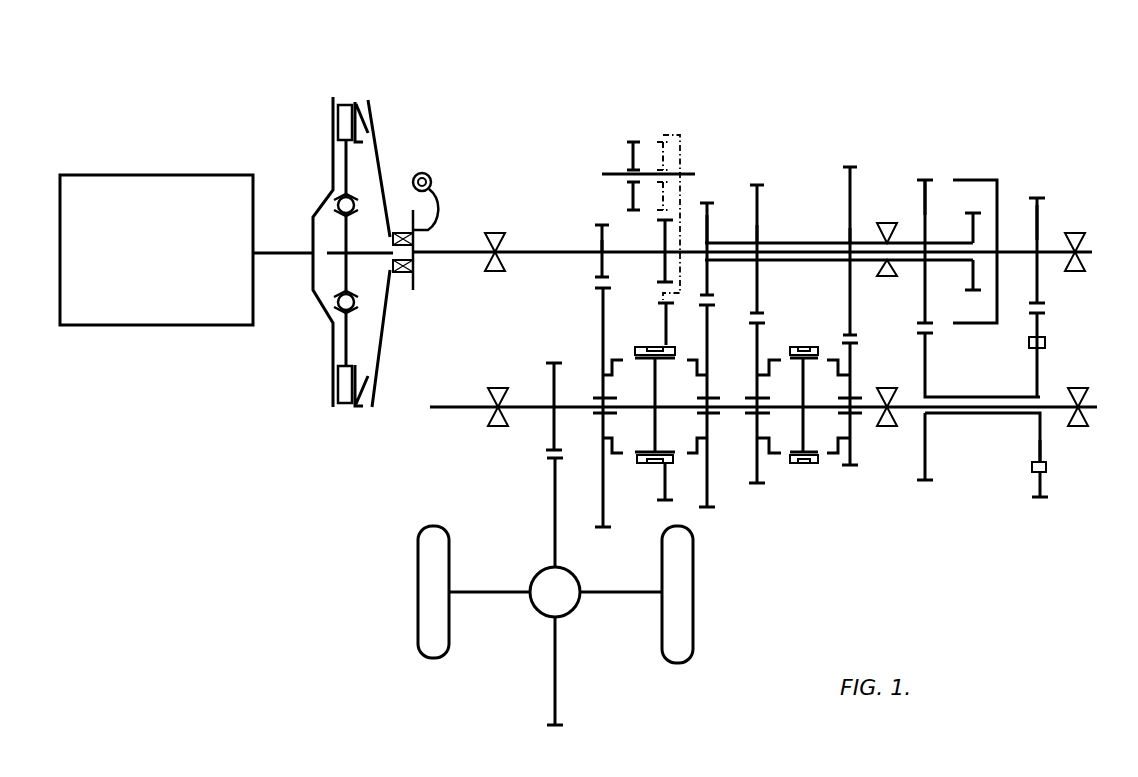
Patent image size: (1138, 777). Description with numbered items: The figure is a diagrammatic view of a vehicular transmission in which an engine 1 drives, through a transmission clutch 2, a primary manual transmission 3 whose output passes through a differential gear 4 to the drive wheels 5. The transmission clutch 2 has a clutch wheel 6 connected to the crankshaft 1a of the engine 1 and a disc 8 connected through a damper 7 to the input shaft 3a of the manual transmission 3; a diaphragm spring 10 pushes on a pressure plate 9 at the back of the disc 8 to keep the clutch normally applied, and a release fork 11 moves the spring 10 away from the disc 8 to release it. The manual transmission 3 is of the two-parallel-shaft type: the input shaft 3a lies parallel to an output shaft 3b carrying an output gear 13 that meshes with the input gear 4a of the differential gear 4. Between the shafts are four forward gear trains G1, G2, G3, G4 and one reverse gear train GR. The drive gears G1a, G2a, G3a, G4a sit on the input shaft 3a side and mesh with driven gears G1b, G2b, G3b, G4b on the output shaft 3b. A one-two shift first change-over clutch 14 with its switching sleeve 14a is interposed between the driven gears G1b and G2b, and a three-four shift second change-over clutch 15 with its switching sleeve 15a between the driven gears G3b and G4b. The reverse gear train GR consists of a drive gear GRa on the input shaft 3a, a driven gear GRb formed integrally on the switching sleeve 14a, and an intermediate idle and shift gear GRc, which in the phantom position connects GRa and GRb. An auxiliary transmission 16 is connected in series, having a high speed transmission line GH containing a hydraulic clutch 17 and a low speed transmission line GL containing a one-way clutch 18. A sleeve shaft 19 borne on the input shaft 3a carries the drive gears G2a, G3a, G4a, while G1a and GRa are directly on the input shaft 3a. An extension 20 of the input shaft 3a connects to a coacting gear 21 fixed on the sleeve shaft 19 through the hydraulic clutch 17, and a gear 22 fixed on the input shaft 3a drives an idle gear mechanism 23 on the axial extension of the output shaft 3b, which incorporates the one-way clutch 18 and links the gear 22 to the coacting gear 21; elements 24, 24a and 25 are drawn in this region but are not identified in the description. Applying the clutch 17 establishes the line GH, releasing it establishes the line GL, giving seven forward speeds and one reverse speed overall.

The engine 1 is at (154, 175).
The crankshaft 1a is at (285, 251).
The transmission clutch 2 is at (352, 87).
The manual transmission 3 is at (759, 120).
The input shaft 3a is at (536, 250).
The output shaft 3b is at (523, 412).
The differential gear 4 is at (546, 614).
The input gear 4a is at (552, 527).
The drive wheels 5 is at (418, 617).
The clutch wheel 6 is at (330, 130).
The damper 7 is at (340, 202).
The disc 8 is at (340, 160).
The pressure plate 9 is at (374, 128).
The diaphragm spring 10 is at (388, 166).
The release fork 11 is at (434, 199).
The output gear 13 is at (553, 363).
The first change-over clutch 14 is at (650, 475).
The switching sleeve 14a is at (660, 468).
The second change-over clutch 15 is at (804, 476).
The switching sleeve 15a is at (815, 468).
The auxiliary transmission 16 is at (988, 123).
The hydraulic clutch 17 is at (971, 179).
The one-way clutch 18 is at (1046, 343).
The sleeve shaft 19 is at (882, 278).
The extension 20 is at (1013, 258).
The coacting gear 21 is at (920, 186).
The gear 22 is at (1040, 210).
The idle gear mechanism 23 is at (977, 474).
The gear 24 is at (925, 483).
The gear hub 24a is at (972, 416).
The coupling 25 is at (1040, 500).
The first speed gear train G1 is at (603, 215).
The first speed drive gear G1a is at (575, 235).
The first speed driven gear G1b is at (602, 430).
The second speed gear train G2 is at (712, 192).
The second speed drive gear G2a is at (730, 200).
The second speed driven gear G2b is at (708, 510).
The third speed gear train G3 is at (763, 178).
The third speed drive gear G3a is at (758, 228).
The third speed driven gear G3b is at (760, 486).
The fourth speed gear train G4 is at (851, 158).
The fourth speed drive gear G4a is at (848, 225).
The fourth speed driven gear G4b is at (853, 468).
The high speed transmission line GH is at (942, 166).
The low speed transmission line GL is at (1038, 186).
The reverse gear train GR is at (666, 130).
The reverse drive gear GRa is at (663, 240).
The reverse driven gear GRb is at (663, 326).
The shift gear GRc is at (632, 141).